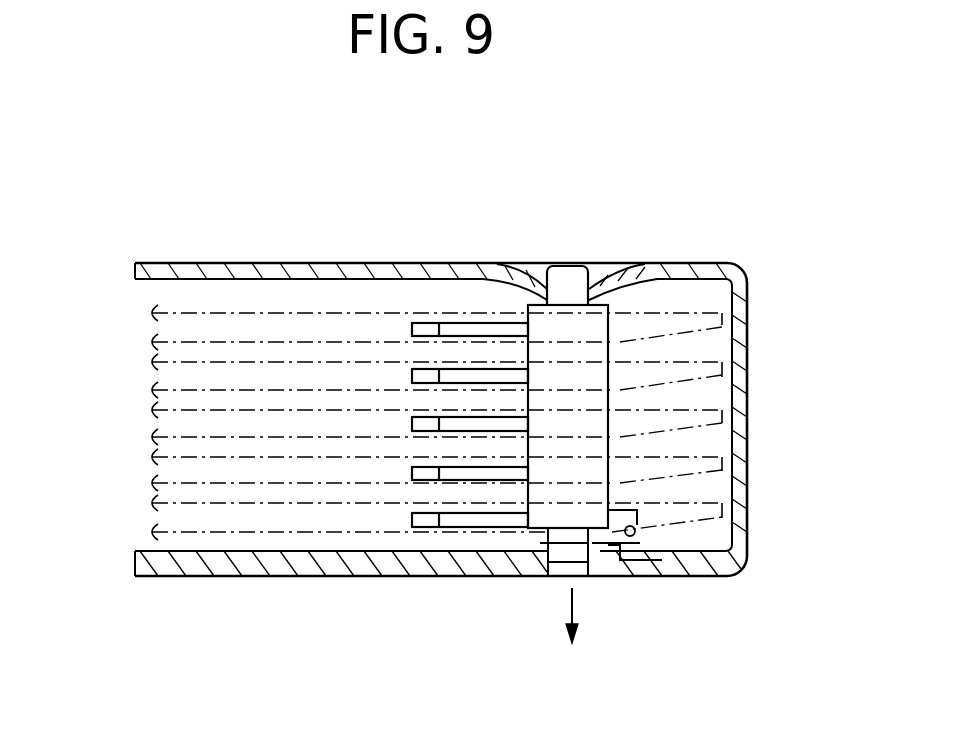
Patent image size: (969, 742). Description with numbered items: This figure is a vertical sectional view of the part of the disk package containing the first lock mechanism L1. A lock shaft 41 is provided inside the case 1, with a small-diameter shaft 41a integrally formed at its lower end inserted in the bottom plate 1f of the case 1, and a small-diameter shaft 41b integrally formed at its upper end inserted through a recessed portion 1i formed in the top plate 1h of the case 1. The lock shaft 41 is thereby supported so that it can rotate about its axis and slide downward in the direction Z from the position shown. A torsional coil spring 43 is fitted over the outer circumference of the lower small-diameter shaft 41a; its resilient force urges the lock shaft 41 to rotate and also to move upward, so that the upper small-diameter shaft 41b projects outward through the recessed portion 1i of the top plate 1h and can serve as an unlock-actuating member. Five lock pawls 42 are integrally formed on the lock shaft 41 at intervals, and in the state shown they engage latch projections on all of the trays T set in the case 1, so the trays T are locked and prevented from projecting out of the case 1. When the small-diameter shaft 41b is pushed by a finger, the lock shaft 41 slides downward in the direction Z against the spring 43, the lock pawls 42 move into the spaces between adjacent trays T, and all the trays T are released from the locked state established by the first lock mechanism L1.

The case 1 is at (441, 427).
The bottom plate 1f is at (289, 577).
The top plate 1h is at (417, 272).
The recessed portion 1i is at (606, 268).
The lock shaft 41 is at (598, 356).
The small-diameter shaft 41a is at (560, 577).
The small-diameter shaft 41b is at (572, 280).
The lock pawls 42 is at (473, 376).
The torsional coil spring 43 is at (583, 572).
The trays T is at (150, 498).
The first lock mechanism L1 is at (707, 446).
The direction Z is at (814, 447).